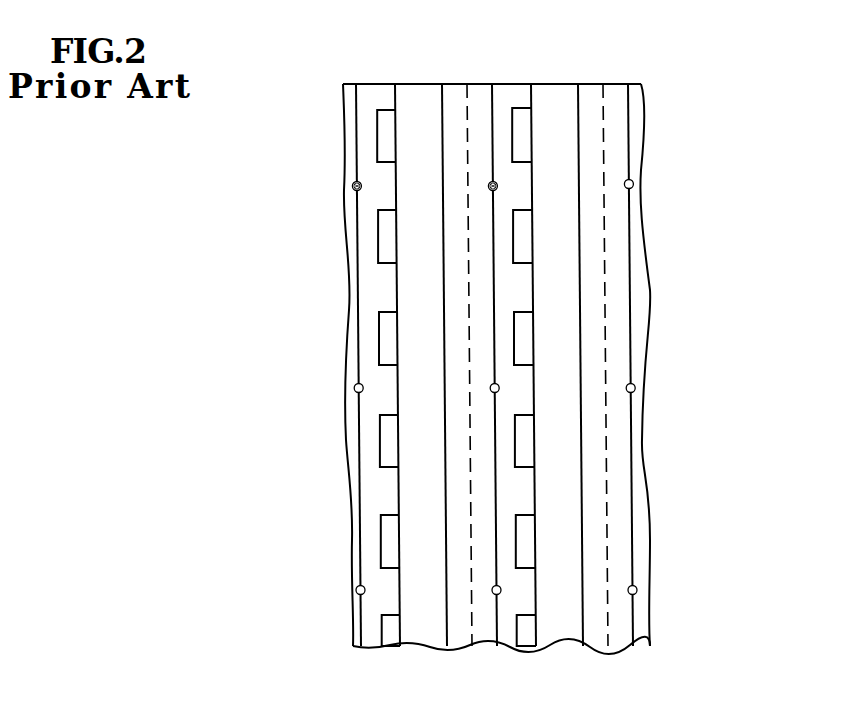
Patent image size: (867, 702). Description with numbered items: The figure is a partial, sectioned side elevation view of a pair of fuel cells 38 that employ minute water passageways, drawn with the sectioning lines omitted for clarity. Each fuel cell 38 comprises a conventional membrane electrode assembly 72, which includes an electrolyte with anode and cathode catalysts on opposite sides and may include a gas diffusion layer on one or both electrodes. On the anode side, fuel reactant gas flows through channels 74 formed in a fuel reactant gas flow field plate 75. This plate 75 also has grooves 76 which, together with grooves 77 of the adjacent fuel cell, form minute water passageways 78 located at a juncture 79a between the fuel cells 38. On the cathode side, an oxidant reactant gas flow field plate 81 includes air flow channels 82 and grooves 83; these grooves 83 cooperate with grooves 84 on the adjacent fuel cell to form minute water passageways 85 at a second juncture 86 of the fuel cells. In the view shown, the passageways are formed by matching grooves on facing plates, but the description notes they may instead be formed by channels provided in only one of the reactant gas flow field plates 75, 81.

The fuel cell 38 is at (296, 106).
The membrane electrode assembly 72 is at (413, 93).
The channels 74 is at (385, 106).
The fuel reactant gas flow field plate 75 is at (370, 97).
The grooves 76 is at (362, 185).
The grooves 77 is at (352, 188).
The minute water passageways 78 is at (354, 388).
The juncture 79a is at (360, 289).
The oxidant reactant gas flow field plate 81 is at (478, 90).
The air flow channels 82 is at (455, 93).
The grooves 83 is at (488, 188).
The grooves 84 is at (498, 185).
The minute water passageways 85 is at (500, 388).
The juncture 86 is at (500, 490).